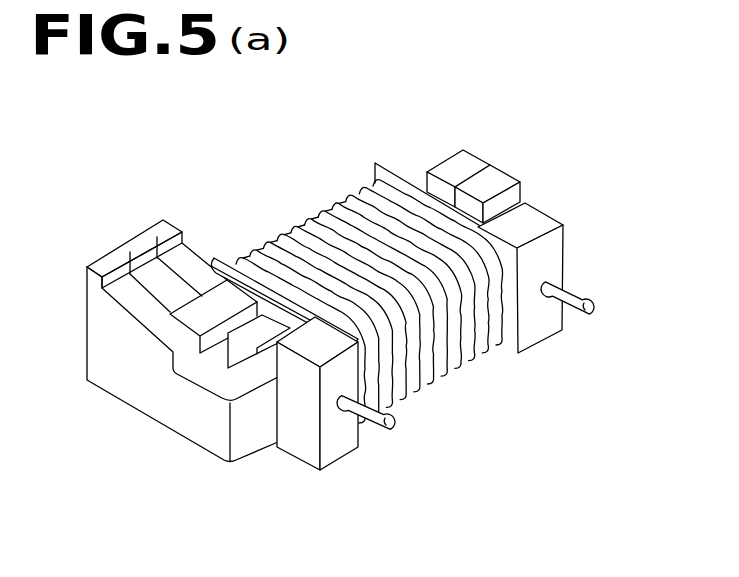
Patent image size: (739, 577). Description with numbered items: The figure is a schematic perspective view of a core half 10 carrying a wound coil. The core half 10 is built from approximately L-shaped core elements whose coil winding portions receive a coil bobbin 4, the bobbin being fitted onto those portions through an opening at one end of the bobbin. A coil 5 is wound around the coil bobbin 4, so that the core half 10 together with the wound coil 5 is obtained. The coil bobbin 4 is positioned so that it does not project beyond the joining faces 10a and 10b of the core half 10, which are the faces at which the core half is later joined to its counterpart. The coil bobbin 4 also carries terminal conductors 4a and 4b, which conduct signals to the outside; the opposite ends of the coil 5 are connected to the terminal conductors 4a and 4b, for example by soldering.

The core half 10 is at (100, 226).
The joining face 10a is at (171, 222).
The joining face 10b is at (472, 157).
The coil bobbin 4 is at (340, 453).
The terminal conductor 4a is at (372, 429).
The terminal conductor 4b is at (570, 292).
The coil 5 is at (442, 376).